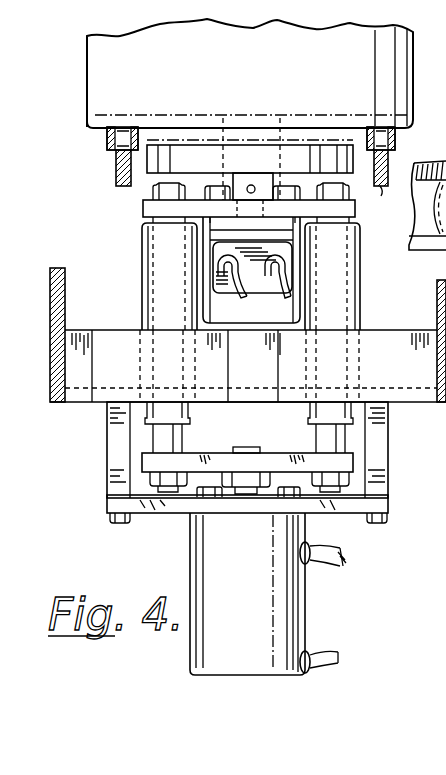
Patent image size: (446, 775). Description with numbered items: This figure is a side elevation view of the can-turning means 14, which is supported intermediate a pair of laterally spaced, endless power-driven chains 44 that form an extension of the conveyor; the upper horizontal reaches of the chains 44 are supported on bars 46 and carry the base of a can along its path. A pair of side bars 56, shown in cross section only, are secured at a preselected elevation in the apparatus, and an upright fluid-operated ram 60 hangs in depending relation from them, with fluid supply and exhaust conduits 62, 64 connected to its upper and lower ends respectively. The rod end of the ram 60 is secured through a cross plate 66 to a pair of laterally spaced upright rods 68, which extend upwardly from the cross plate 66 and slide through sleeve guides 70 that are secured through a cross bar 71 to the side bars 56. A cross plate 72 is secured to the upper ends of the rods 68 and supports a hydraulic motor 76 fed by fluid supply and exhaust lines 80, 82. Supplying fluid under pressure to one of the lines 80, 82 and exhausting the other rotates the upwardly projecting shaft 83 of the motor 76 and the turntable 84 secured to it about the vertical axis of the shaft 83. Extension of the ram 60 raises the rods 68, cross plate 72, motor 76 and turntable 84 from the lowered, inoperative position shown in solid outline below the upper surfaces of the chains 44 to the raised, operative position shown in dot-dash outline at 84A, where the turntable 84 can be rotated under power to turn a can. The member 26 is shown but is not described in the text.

The turning means 14 is at (100, 243).
The frame member 26 is at (304, 62).
The power-driven chains 44 is at (108, 138).
The bars 46 is at (118, 172).
The side bars 56 is at (65, 276).
The fluid-operated ram 60 is at (208, 555).
The fluid supply and exhaust conduit 62 is at (320, 558).
The fluid supply and exhaust conduit 64 is at (323, 656).
The cross plate 66 is at (215, 460).
The upright rods 68 is at (323, 437).
The sleeve guides 70 is at (145, 297).
The cross bar 71 is at (115, 372).
The cross plate 72 is at (143, 207).
The hydraulic motor 76 is at (215, 250).
The fluid supply and exhaust line 80 is at (232, 288).
The fluid supply and exhaust line 82 is at (274, 288).
The shaft 83 is at (240, 180).
The turntable 84 is at (196, 155).
The raised position of turntable 84A is at (178, 118).